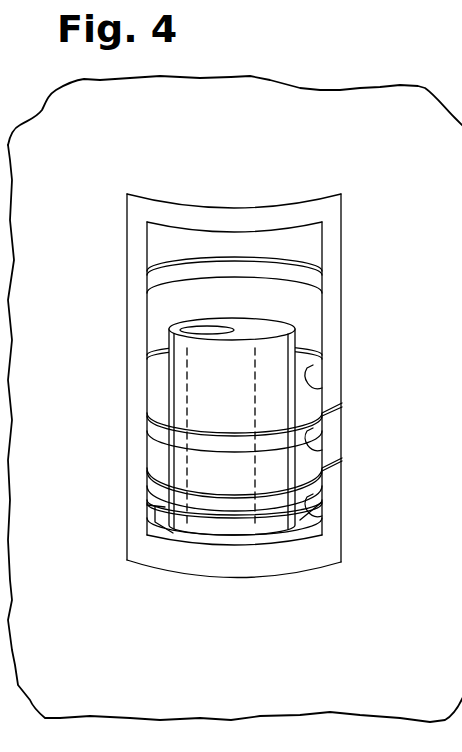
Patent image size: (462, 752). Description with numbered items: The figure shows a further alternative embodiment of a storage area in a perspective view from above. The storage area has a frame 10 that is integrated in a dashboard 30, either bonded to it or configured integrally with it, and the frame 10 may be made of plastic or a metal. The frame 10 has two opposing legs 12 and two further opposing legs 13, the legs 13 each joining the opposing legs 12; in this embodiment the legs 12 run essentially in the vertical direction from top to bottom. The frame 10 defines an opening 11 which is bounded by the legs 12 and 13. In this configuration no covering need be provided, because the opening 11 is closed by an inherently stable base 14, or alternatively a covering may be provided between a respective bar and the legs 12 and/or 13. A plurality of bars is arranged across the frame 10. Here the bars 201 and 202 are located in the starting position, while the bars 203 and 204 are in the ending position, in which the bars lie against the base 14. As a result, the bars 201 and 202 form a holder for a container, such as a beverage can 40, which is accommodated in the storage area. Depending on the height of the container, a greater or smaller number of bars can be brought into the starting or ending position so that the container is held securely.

The frame 10 is at (232, 398).
The opening 11 is at (172, 300).
The legs 12 is at (232, 394).
The legs 13 is at (243, 216).
The base 14 is at (166, 506).
The dashboard 30 is at (192, 132).
The beverage can 40 is at (197, 410).
The bar 201 is at (322, 516).
The bar 202 is at (322, 450).
The bar 204 is at (293, 258).